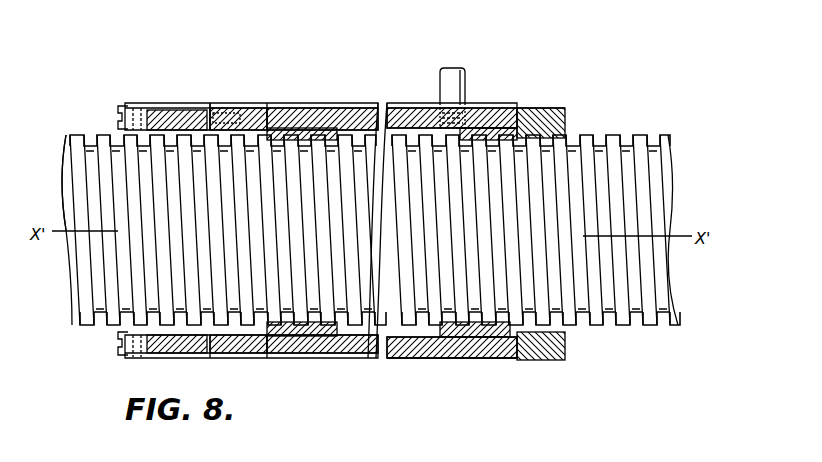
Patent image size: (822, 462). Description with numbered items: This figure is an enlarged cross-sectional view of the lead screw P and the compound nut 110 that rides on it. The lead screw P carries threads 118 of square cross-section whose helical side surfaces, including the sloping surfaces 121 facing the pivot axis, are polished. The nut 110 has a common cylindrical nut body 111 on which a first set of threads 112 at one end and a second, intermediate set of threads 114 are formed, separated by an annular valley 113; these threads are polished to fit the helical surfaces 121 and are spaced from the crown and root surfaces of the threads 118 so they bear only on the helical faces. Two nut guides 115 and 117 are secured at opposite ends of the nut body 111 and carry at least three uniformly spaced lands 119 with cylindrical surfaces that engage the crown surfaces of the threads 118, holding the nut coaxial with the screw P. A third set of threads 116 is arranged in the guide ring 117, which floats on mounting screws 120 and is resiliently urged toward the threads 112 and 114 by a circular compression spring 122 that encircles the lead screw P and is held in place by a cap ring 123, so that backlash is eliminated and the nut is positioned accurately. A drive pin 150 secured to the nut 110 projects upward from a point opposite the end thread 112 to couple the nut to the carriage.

The nut 110 is at (398, 366).
The nut body 111 is at (428, 360).
The first set of threads 112 is at (492, 135).
The annular valley 113 is at (436, 108).
The second set of threads 114 is at (312, 128).
The nut guide 115 is at (558, 122).
The third set of threads 116 is at (190, 128).
The guide ring 117 is at (162, 112).
The threads 118 is at (92, 137).
The lands 119 is at (235, 358).
The mounting screws 120 is at (126, 105).
The helical surfaces 121 is at (496, 333).
The circular compression spring 122 is at (137, 357).
The cap ring 123 is at (178, 358).
The drive pin 150 is at (465, 70).
The lead screw P is at (72, 171).